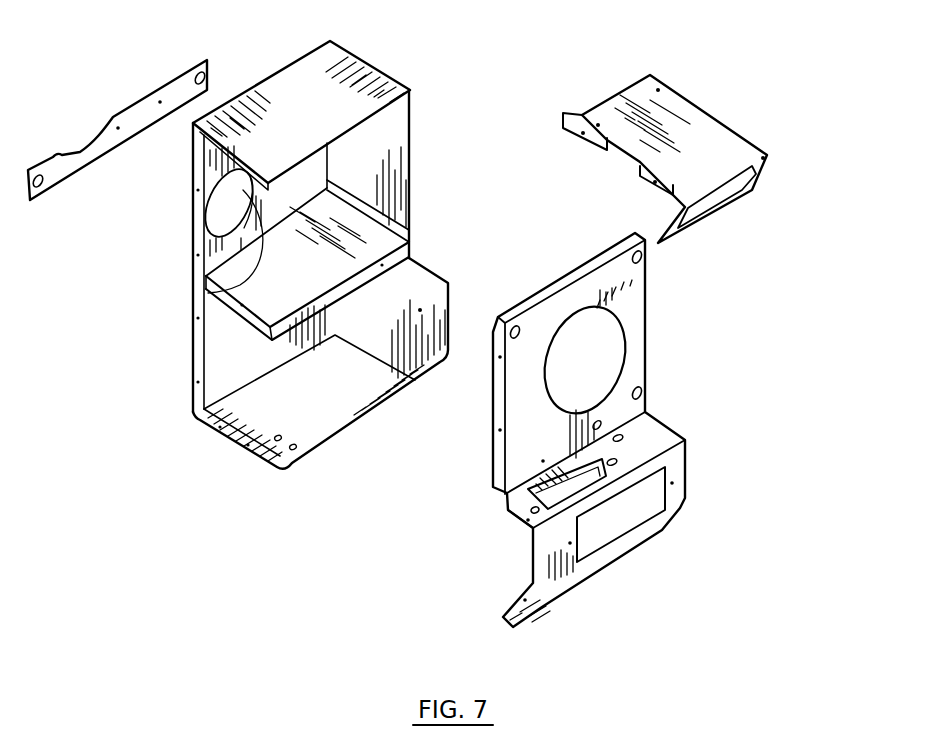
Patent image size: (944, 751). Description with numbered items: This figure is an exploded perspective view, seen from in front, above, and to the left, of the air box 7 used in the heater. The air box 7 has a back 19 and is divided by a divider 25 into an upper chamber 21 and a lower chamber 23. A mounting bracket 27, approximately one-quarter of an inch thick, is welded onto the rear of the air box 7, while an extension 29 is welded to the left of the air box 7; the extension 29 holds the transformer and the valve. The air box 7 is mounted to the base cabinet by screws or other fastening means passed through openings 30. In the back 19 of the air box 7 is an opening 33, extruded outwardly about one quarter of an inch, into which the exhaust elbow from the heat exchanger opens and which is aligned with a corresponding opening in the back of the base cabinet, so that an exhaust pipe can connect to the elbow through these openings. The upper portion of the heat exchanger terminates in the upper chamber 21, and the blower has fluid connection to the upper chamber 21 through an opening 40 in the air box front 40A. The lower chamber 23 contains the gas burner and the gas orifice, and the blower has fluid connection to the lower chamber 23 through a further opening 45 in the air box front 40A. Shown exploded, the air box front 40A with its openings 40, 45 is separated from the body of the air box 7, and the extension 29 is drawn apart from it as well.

The air box 7 is at (363, 53).
The back 19 is at (237, 334).
The upper chamber 21 is at (230, 288).
The lower chamber 23 is at (200, 420).
The divider 25 is at (331, 285).
The mounting bracket 27 is at (96, 160).
The extension 29 is at (742, 142).
The openings 30 is at (205, 77).
The opening 33 is at (224, 196).
The opening 40 is at (588, 350).
The air box front 40A is at (633, 280).
The opening 45 is at (560, 497).